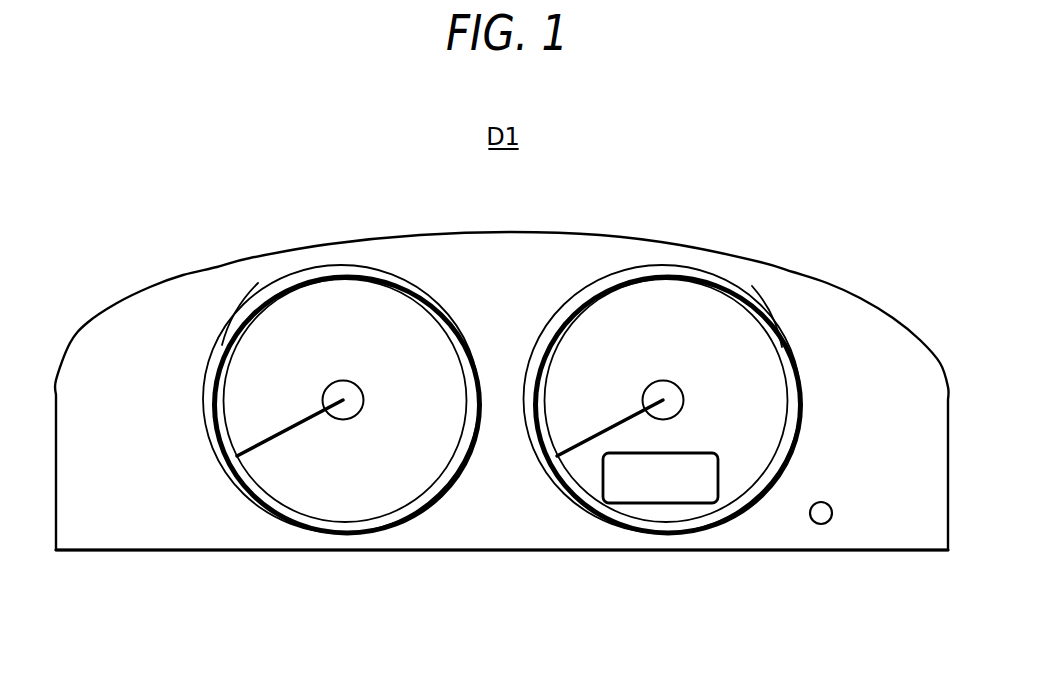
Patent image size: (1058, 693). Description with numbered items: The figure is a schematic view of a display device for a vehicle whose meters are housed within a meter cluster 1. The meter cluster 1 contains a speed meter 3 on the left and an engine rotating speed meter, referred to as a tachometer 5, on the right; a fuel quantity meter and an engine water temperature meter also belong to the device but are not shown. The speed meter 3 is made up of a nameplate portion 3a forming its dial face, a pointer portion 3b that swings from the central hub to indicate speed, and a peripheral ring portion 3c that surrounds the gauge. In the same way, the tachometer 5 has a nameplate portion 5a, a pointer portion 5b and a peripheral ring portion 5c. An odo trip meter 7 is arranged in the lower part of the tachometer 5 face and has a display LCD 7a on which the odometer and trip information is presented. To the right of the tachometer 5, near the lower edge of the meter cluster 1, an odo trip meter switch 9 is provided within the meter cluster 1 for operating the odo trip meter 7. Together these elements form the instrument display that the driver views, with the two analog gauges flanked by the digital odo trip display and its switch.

The meter cluster 1 is at (783, 264).
The speed meter 3 is at (275, 278).
The nameplate portion 3a is at (356, 300).
The pointer portion 3b is at (258, 445).
The peripheral ring portion 3c is at (223, 343).
The tachometer 5 is at (595, 280).
The nameplate portion 5a is at (675, 300).
The pointer portion 5b is at (578, 450).
The peripheral ring portion 5c is at (780, 347).
The odo trip meter 7 is at (722, 481).
The display LCD 7a is at (665, 495).
The odo trip meter switch 9 is at (821, 525).